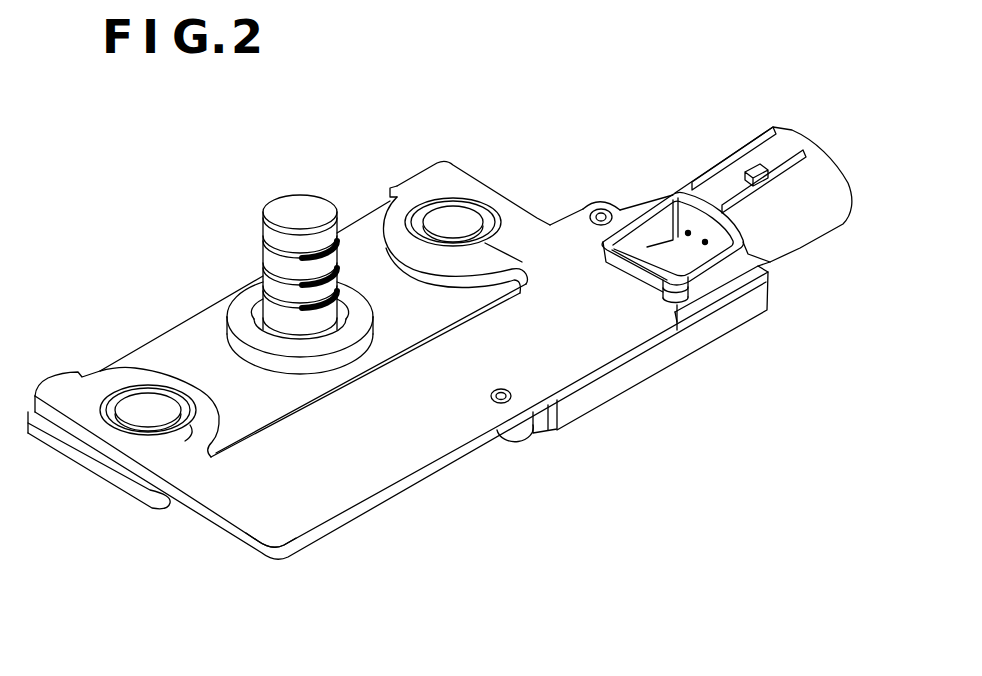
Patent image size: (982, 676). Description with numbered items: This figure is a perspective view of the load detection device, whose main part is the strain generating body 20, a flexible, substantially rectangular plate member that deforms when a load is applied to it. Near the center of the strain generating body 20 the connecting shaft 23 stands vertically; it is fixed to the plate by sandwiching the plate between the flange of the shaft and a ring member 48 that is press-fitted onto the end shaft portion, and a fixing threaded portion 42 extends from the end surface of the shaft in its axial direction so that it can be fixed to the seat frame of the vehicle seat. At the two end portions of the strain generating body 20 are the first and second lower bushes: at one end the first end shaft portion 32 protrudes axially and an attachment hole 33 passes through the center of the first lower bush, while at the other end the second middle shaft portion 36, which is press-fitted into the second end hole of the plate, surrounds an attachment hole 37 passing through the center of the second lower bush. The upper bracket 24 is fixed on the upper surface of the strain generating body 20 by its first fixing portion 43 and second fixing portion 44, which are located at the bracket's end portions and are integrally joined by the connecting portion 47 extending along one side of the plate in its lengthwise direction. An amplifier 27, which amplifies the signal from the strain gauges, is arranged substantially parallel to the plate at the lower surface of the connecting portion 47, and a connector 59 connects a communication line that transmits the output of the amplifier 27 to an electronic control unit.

The strain generating body 20 is at (362, 228).
The connecting shaft 23 is at (298, 205).
The upper bracket 24 is at (261, 553).
The amplifier 27 is at (608, 387).
The first end shaft portion 32 is at (118, 425).
The attachment hole 33 is at (147, 407).
The second middle shaft portion 36 is at (483, 208).
The attachment hole 37 is at (455, 225).
The fixing threaded portion 42 is at (263, 247).
The first fixing portion 43 is at (63, 396).
The second fixing portion 44 is at (428, 178).
The connecting portion 47 is at (455, 413).
The ring member 48 is at (240, 317).
The connector 59 is at (803, 230).